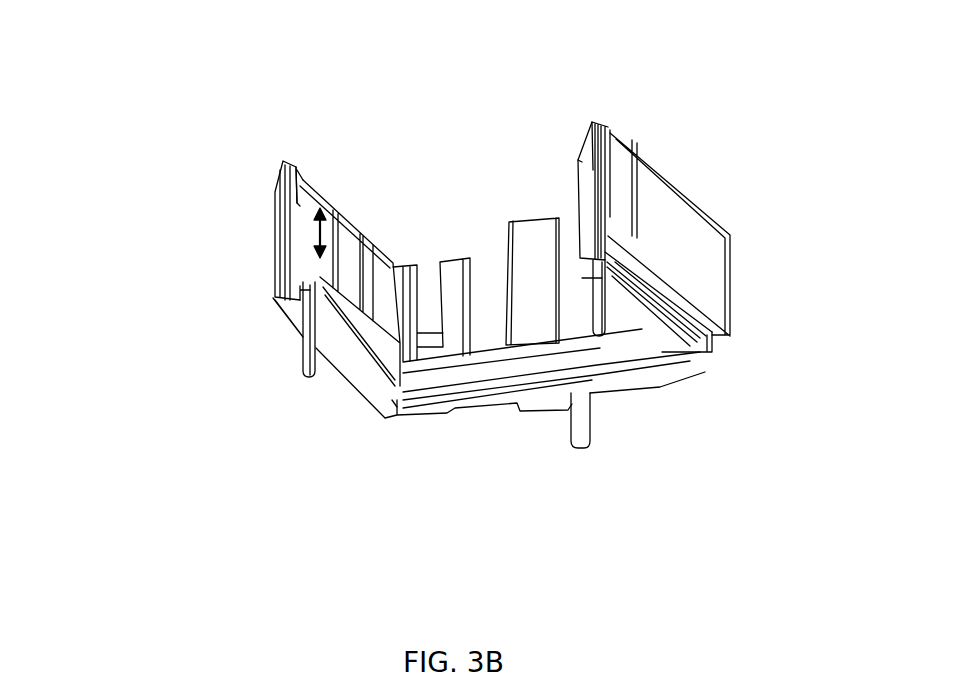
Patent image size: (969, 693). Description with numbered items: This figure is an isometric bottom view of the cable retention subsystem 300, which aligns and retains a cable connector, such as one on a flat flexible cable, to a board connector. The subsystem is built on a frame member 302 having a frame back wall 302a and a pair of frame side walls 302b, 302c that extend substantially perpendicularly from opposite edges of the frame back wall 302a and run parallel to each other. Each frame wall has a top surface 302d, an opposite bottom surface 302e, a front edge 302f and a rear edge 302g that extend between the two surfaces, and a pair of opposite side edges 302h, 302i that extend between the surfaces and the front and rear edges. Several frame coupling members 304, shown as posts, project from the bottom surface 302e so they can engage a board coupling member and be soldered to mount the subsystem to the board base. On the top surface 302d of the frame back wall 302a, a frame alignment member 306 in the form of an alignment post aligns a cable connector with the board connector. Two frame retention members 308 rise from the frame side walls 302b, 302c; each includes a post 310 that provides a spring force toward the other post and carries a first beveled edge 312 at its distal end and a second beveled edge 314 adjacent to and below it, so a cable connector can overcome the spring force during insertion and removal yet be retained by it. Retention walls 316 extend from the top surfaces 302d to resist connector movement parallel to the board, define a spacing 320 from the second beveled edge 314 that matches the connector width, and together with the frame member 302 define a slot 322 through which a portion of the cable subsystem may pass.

The cable retention subsystem 300 is at (166, 83).
The frame member 302 is at (705, 370).
The frame back wall 302a is at (477, 378).
The frame side wall 302b is at (365, 355).
The frame side wall 302c is at (647, 305).
The top surface 302d is at (497, 363).
The bottom surface 302e is at (392, 410).
The front edge 302f is at (310, 295).
The rear edge 302g is at (712, 352).
The side edge 302h is at (287, 317).
The side edge 302i is at (665, 325).
The frame coupling member 304 is at (305, 360).
The frame alignment member 306 is at (535, 215).
The frame retention member 308 is at (288, 180).
The post 310 is at (278, 229).
The first beveled edge 312 is at (294, 166).
The second beveled edge 314 is at (302, 207).
The retention wall 316 is at (367, 240).
The spacing 320 is at (313, 216).
The slot 322 is at (428, 133).